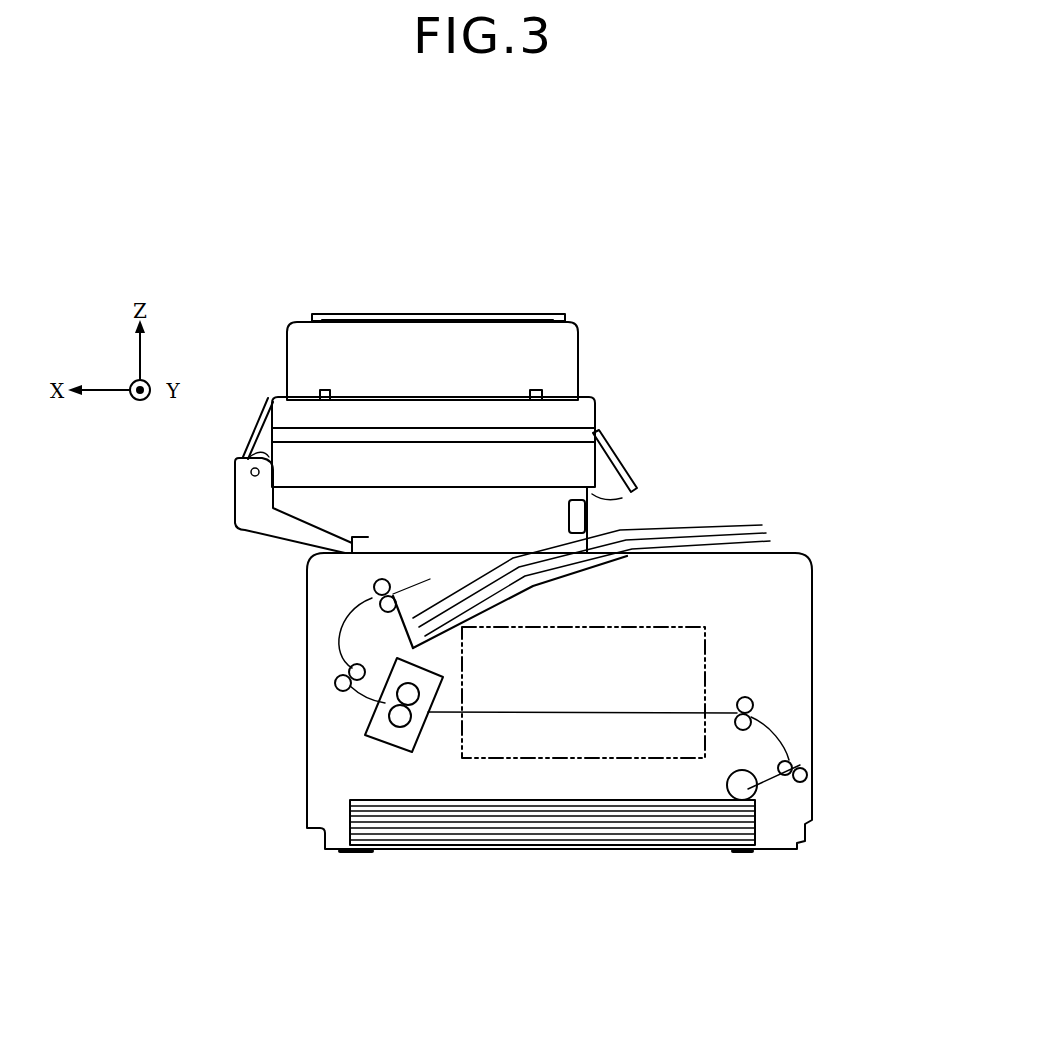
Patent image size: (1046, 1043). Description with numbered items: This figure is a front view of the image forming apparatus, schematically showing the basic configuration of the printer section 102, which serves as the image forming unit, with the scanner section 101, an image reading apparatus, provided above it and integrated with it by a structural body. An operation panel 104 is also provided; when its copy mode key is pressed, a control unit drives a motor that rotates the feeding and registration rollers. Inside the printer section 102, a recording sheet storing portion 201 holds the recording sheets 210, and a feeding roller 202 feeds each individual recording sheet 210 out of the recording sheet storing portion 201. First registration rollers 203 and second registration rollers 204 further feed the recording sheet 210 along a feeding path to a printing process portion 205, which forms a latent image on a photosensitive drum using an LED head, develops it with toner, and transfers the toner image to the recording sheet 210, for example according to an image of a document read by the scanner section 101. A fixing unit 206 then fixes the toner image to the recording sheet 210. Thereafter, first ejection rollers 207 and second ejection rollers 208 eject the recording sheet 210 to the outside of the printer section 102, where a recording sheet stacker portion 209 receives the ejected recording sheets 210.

The scanner section 101 is at (488, 308).
The printer section 102 is at (792, 543).
The operation panel 104 is at (613, 457).
The recording sheet storing portion 201 is at (350, 820).
The feeding roller 202 is at (746, 787).
The first registration rollers 203 is at (806, 770).
The second registration rollers 204 is at (753, 702).
The printing process portion 205 is at (703, 641).
The fixing unit 206 is at (366, 718).
The first ejection rollers 207 is at (349, 673).
The second ejection rollers 208 is at (374, 590).
The recording sheet stacker portion 209 is at (445, 575).
The recording sheets 210 is at (711, 528).